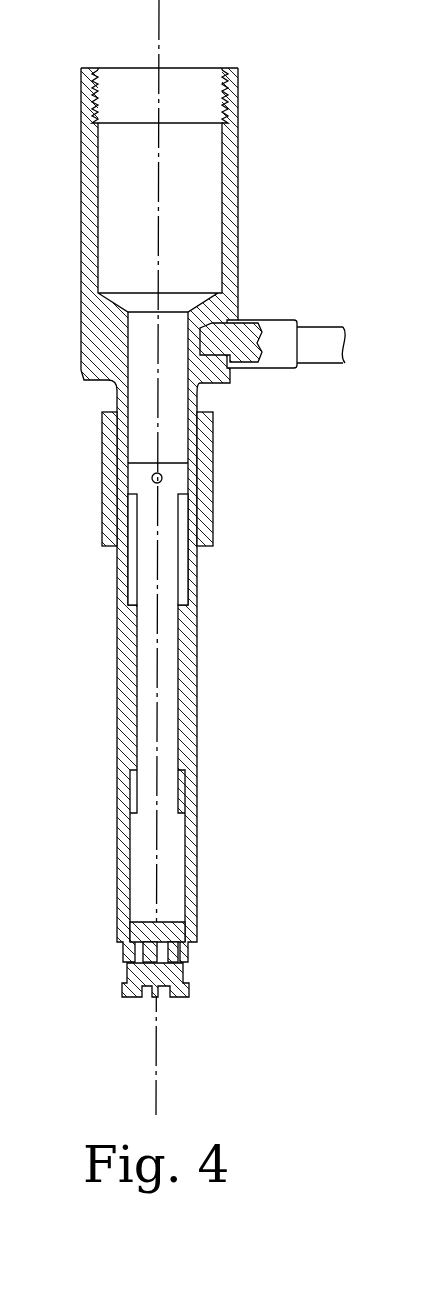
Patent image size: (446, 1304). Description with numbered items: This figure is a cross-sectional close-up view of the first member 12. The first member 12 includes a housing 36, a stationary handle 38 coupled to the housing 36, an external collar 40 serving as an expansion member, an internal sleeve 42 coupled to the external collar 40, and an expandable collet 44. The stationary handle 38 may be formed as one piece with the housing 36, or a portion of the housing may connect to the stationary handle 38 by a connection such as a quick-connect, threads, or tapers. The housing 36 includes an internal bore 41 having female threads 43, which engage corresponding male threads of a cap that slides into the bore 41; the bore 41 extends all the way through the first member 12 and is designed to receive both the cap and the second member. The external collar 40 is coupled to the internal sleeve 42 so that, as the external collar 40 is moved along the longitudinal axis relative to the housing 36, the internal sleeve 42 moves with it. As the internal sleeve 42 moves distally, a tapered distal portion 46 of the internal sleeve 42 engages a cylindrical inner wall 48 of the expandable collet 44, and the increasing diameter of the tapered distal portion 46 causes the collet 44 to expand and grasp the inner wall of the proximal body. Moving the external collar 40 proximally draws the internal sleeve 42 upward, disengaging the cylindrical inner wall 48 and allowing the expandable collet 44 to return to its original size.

The first member 12 is at (330, 460).
The housing 36 is at (239, 213).
The stationary handle 38 is at (278, 322).
The external collar 40 is at (212, 490).
The internal bore 41 is at (198, 181).
The internal sleeve 42 is at (172, 716).
The female threads 43 is at (228, 98).
The expandable collet 44 is at (187, 974).
The tapered distal portion 46 is at (167, 921).
The cylindrical inner wall 48 is at (162, 939).